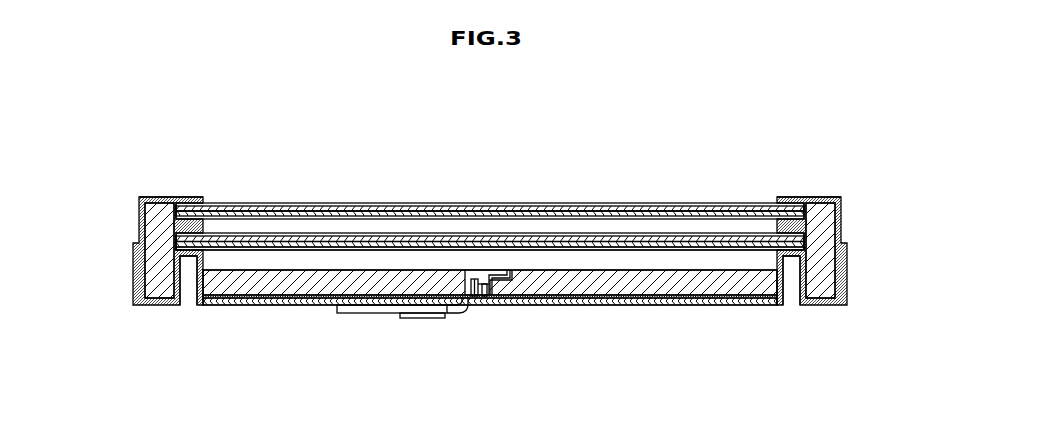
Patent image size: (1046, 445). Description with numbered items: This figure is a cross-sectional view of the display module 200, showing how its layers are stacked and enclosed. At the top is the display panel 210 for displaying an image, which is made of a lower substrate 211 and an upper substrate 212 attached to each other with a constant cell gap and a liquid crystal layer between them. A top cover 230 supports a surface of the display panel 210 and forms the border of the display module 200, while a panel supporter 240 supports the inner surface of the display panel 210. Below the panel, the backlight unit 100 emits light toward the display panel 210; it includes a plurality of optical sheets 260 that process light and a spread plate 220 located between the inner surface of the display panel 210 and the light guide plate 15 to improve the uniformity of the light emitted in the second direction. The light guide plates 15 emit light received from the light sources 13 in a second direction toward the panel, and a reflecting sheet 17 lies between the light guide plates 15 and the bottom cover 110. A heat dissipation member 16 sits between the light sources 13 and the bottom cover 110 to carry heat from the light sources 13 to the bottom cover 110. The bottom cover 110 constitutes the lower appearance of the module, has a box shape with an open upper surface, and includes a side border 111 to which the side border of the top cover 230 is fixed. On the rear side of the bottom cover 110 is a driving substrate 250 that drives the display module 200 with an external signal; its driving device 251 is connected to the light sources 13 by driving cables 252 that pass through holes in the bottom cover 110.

The display module 200 is at (712, 111).
The display panel 210 is at (442, 144).
The lower substrate 211 is at (428, 213).
The upper substrate 212 is at (360, 203).
The spread plate 220 is at (637, 250).
The top cover 230 is at (180, 197).
The panel supporter 240 is at (163, 297).
The driving substrate 250 is at (363, 313).
The driving device 251 is at (418, 318).
The driving cables 252 is at (458, 318).
The optical sheets 260 is at (570, 242).
The backlight unit 100 is at (322, 313).
The bottom cover 110 is at (220, 302).
The side border 111 is at (191, 298).
The light sources 13 is at (500, 298).
The light guide plates 15 is at (570, 283).
The heat dissipation member 16 is at (476, 298).
The reflecting sheet 17 is at (258, 302).